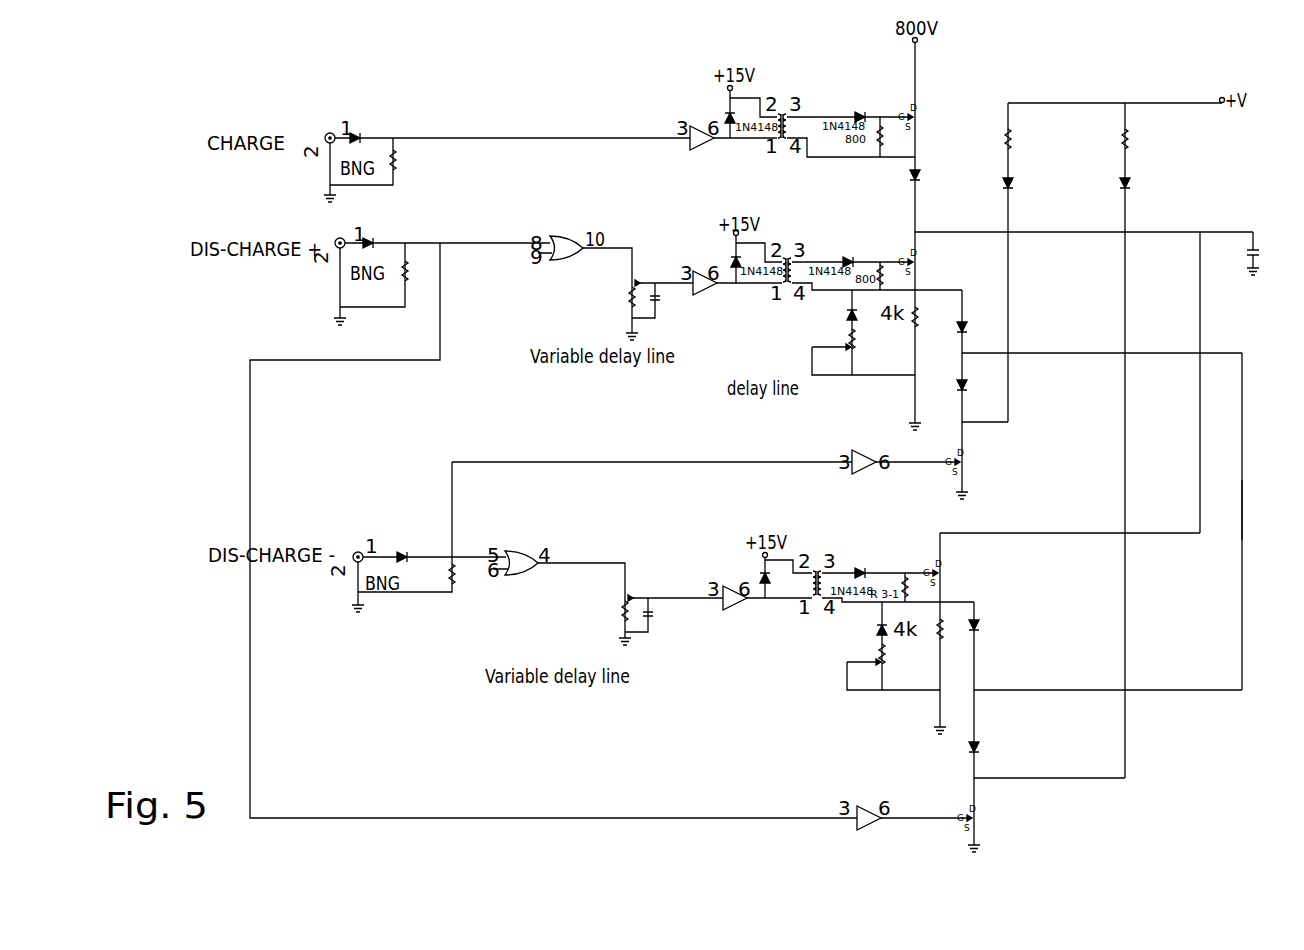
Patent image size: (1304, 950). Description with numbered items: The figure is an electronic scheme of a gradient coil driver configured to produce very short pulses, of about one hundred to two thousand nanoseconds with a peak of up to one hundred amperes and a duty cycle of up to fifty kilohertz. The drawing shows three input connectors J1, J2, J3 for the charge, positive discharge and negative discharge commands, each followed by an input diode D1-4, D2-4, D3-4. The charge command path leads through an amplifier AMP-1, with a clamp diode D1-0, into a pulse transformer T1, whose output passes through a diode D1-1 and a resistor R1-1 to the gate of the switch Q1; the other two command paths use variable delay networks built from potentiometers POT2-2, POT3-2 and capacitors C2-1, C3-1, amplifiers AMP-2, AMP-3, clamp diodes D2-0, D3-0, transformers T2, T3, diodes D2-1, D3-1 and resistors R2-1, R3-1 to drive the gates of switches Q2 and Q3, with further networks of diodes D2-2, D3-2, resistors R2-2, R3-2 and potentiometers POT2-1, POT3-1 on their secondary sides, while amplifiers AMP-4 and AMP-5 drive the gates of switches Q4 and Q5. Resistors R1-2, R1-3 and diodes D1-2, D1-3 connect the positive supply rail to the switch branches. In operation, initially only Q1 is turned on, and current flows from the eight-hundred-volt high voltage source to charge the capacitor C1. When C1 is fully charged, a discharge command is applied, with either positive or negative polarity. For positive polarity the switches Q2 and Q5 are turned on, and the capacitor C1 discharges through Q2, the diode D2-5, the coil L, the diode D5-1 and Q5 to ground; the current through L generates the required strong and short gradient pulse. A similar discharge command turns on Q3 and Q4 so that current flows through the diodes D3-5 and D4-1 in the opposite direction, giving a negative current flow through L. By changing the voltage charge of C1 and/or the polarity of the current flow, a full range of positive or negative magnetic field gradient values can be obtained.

The charge input connector J1 is at (502, 154).
The discharge positive input connector J2 is at (437, 268).
The discharge negative input connector J3 is at (422, 568).
The input diode D1-4 is at (372, 124).
The input diode D2-4 is at (394, 228).
The input diode D3-4 is at (399, 538).
The clamp diode D1-0 is at (723, 112).
The clamp diode D2-0 is at (731, 240).
The clamp diode D3-0 is at (760, 552).
The gate diode D1-1 is at (860, 105).
The gate diode D2-1 is at (849, 250).
The gate diode D3-1 is at (881, 559).
The diode D1-2 is at (1038, 185).
The diode D1-3 is at (1149, 185).
The diode D2-2 is at (824, 332).
The diode D3-2 is at (852, 646).
The diode D2-5 is at (1099, 391).
The diode D3-5 is at (1105, 723).
The diode D4-1 is at (991, 386).
The diode D5-1 is at (1004, 746).
The pulse transformer T1 is at (842, 114).
The pulse transformer T2 is at (869, 253).
The pulse transformer T3 is at (892, 564).
The switch Q1 is at (921, 135).
The switch Q2 is at (925, 330).
The switch Q3 is at (1061, 633).
The switch Q4 is at (967, 467).
The switch Q5 is at (977, 820).
The gate resistor R1-1 is at (902, 137).
The resistor R1-2 is at (1036, 139).
The resistor R1-3 is at (1147, 139).
The gate resistor R2-1 is at (905, 278).
The resistor R2-2 is at (883, 338).
The resistor R3-1 is at (1077, 658).
The resistor R3-2 is at (908, 654).
The amplifier AMP-1 is at (724, 153).
The amplifier AMP-2 is at (729, 299).
The amplifier AMP-3 is at (758, 614).
The amplifier AMP-4 is at (896, 482).
The amplifier AMP-5 is at (862, 833).
The potentiometer POT2-1 is at (820, 359).
The variable delay potentiometer POT2-2 is at (623, 298).
The potentiometer POT3-1 is at (852, 680).
The variable delay potentiometer POT3-2 is at (628, 608).
The capacitor C1 is at (1265, 253).
The delay capacitor C2-1 is at (658, 275).
The delay capacitor C3-1 is at (654, 591).
The gradient coil L is at (1253, 510).